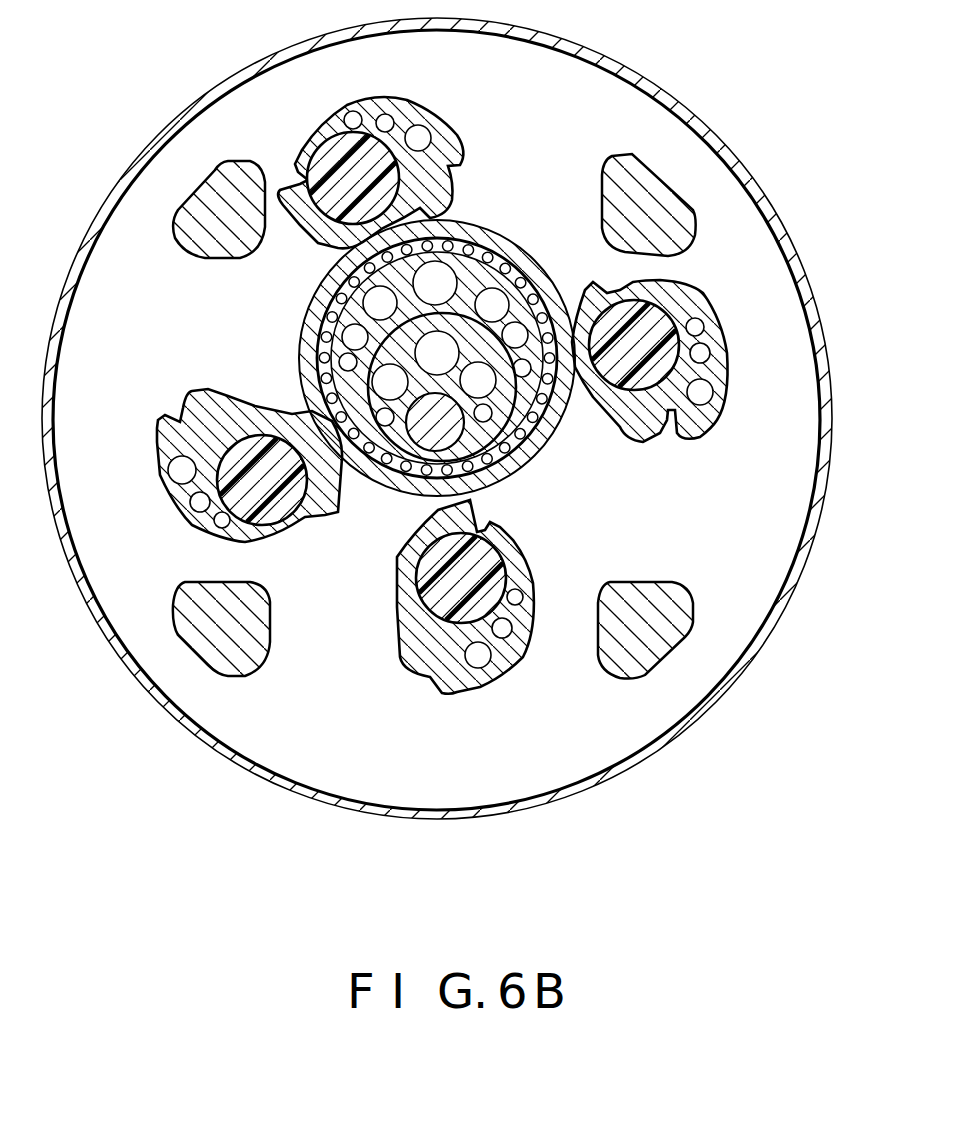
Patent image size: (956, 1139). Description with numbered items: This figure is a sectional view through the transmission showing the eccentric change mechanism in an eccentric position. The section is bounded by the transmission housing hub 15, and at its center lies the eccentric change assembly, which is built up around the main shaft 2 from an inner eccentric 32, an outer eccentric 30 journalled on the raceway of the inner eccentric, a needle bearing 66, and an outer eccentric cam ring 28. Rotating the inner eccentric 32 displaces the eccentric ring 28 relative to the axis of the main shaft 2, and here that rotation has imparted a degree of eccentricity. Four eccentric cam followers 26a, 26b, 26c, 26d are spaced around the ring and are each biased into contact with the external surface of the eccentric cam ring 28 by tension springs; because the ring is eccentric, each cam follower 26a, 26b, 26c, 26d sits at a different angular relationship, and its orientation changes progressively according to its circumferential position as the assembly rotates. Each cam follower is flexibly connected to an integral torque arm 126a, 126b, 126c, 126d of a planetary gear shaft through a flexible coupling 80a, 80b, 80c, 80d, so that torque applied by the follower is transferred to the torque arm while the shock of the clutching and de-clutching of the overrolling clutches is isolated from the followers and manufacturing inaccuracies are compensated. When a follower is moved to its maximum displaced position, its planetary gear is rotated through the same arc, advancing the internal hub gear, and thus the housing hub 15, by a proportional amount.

The transmission housing hub 15 is at (578, 48).
The outer eccentric 30 is at (345, 283).
The eccentric cam ring 28 is at (508, 252).
The main shaft 2 is at (503, 427).
The inner eccentric 32 is at (405, 447).
The needle bearing 66 is at (463, 428).
The eccentric cam follower 26a is at (455, 190).
The eccentric cam follower 26b is at (660, 432).
The eccentric cam follower 26c is at (400, 622).
The eccentric cam follower 26d is at (233, 400).
The flexible coupling 80a is at (345, 160).
The flexible coupling 80b is at (665, 369).
The flexible coupling 80c is at (478, 548).
The flexible coupling 80d is at (287, 497).
The torque arm 126a is at (408, 118).
The torque arm 126b is at (688, 308).
The torque arm 126c is at (527, 566).
The torque arm 126d is at (156, 438).